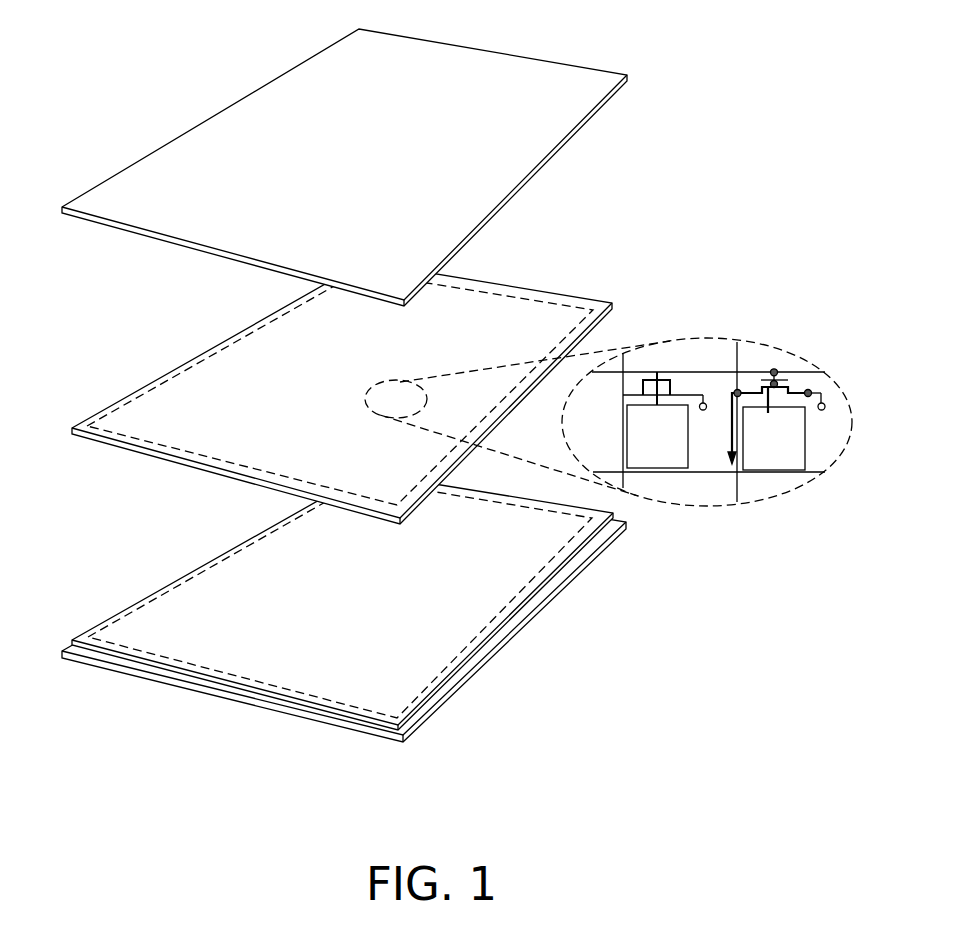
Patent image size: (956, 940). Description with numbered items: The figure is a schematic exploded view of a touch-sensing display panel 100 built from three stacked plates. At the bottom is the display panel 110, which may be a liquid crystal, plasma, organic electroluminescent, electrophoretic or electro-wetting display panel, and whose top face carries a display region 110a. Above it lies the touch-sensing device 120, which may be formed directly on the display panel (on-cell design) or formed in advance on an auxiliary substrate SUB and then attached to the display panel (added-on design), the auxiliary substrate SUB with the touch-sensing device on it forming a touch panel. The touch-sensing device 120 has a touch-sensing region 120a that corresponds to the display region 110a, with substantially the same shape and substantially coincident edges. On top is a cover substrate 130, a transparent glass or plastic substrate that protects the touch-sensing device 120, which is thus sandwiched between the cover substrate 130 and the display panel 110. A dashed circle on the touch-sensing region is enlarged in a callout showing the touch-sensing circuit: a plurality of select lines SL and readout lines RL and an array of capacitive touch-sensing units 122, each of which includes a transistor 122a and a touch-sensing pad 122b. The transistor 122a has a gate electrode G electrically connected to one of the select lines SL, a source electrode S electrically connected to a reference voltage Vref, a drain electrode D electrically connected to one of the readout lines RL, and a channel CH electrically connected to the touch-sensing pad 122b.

The touch-sensing display panel 100 is at (603, 770).
The display panel 110 is at (333, 627).
The display region 110a is at (192, 630).
The touch-sensing device 120 is at (312, 393).
The touch-sensing region 120a is at (185, 417).
The cover substrate 130 is at (155, 237).
The auxiliary substrate SUB is at (187, 463).
The capacitive touch-sensing unit 122 is at (694, 369).
The transistor 122a is at (731, 373).
The touch-sensing pad 122b is at (772, 374).
The select line SL is at (715, 370).
The readout line RL is at (621, 421).
The drain electrode D is at (739, 390).
The gate electrode G is at (777, 370).
The channel CH is at (790, 380).
The source electrode S is at (811, 393).
The reference voltage Vref is at (767, 420).